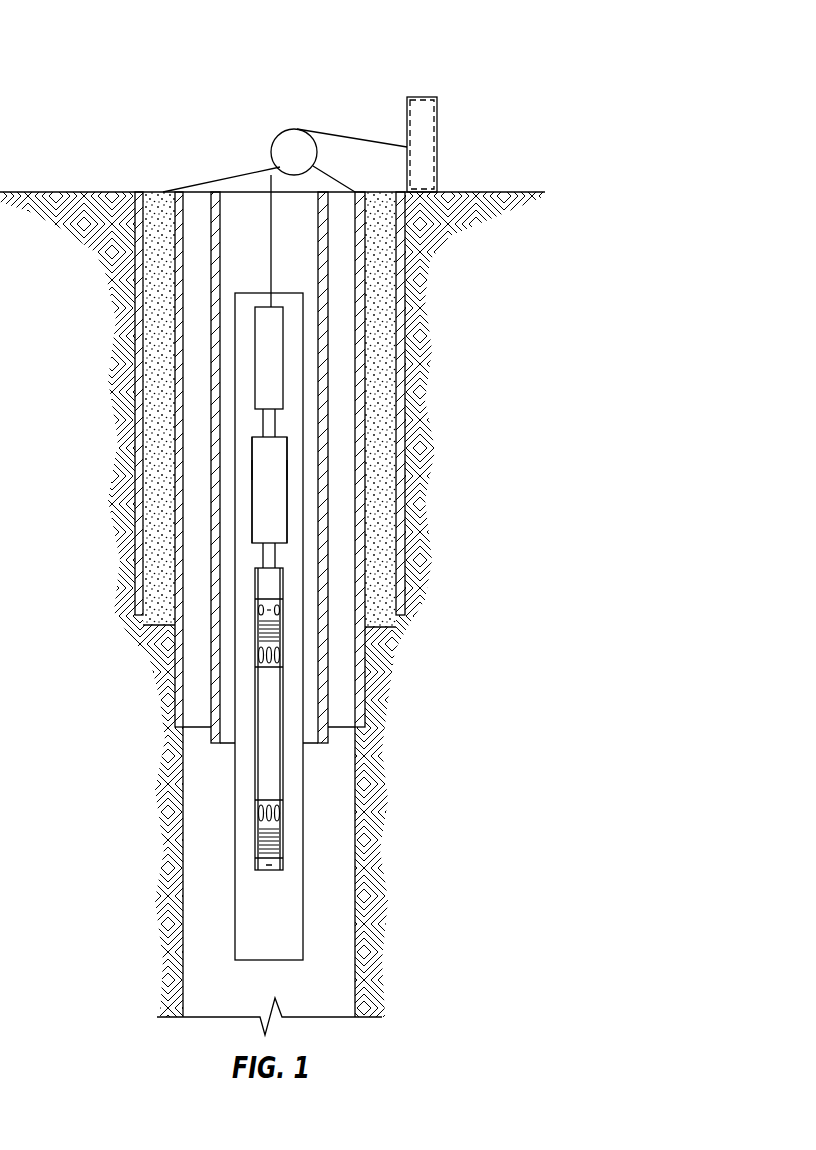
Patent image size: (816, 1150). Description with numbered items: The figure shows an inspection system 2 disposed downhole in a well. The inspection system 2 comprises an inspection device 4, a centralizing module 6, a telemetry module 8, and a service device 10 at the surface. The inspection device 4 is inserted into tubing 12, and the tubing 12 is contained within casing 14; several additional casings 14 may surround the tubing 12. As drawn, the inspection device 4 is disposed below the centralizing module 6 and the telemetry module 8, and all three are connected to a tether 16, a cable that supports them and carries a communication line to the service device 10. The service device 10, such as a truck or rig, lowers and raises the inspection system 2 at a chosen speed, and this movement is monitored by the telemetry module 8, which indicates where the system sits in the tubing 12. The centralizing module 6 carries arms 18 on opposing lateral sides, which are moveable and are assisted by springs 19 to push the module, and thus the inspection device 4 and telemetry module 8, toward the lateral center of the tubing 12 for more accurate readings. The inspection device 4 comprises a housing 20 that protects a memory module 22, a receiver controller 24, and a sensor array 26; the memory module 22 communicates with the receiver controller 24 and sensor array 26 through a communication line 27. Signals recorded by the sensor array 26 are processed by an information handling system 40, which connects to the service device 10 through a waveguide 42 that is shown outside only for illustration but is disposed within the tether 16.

The inspection system 2 is at (163, 96).
The inspection device 4 is at (338, 846).
The centralizing module 6 is at (287, 453).
The telemetry module 8 is at (283, 342).
The service device 10 is at (400, 54).
The tubing 12 is at (205, 727).
The casing 14 is at (175, 322).
The tether 16 is at (283, 560).
The arms 18 is at (252, 472).
The springs 19 is at (252, 467).
The housing 20 is at (235, 405).
The memory module 22 is at (255, 630).
The receiver controller 24 is at (177, 642).
The sensor array 26 is at (283, 767).
The communication line 27 is at (255, 742).
The information handling system 40 is at (425, 143).
The waveguide 42 is at (271, 172).